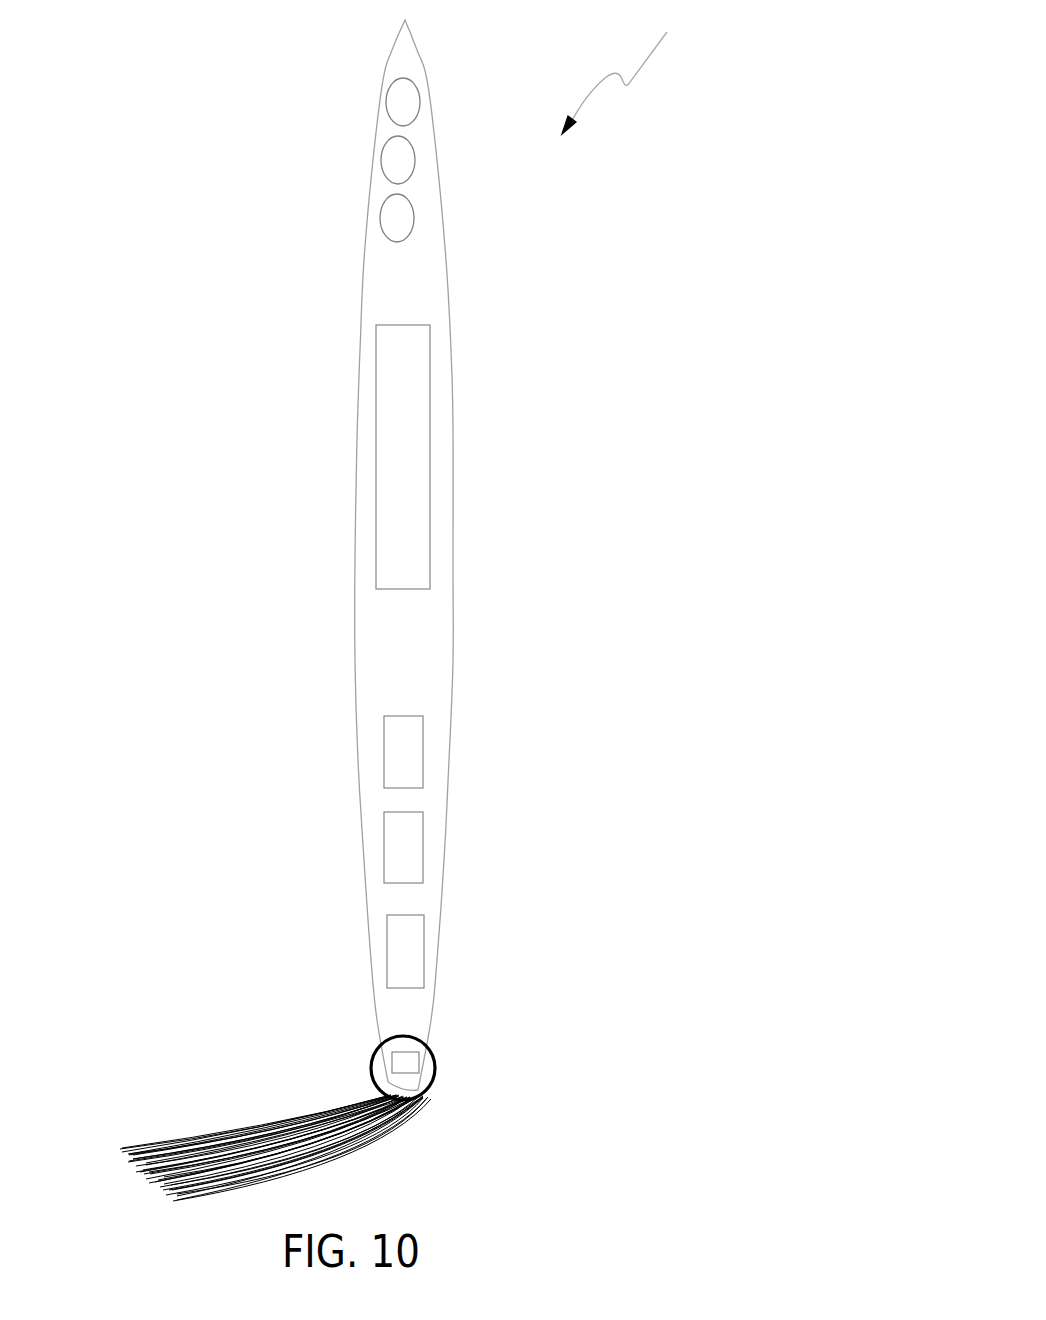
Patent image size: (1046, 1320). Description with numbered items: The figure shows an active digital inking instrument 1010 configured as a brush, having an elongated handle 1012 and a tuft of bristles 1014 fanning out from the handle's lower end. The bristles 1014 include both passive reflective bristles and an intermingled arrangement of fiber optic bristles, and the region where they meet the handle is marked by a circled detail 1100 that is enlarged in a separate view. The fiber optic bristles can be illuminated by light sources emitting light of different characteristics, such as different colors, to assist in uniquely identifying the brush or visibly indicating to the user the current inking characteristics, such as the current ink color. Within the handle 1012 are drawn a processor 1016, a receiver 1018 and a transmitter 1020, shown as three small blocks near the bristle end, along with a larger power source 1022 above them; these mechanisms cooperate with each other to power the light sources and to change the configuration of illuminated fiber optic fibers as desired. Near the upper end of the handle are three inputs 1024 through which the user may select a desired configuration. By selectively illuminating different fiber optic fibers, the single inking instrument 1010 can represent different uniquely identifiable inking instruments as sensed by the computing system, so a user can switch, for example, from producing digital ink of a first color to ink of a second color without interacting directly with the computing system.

The active digital inking instrument 1010 is at (641, 67).
The handle 1012 is at (414, 640).
The bristles 1014 is at (258, 1128).
The processor 1016 is at (414, 949).
The receiver 1018 is at (414, 845).
The transmitter 1020 is at (414, 757).
The power source 1022 is at (412, 388).
The inputs 1024 is at (384, 98).
The sensor 1100 is at (435, 1072).